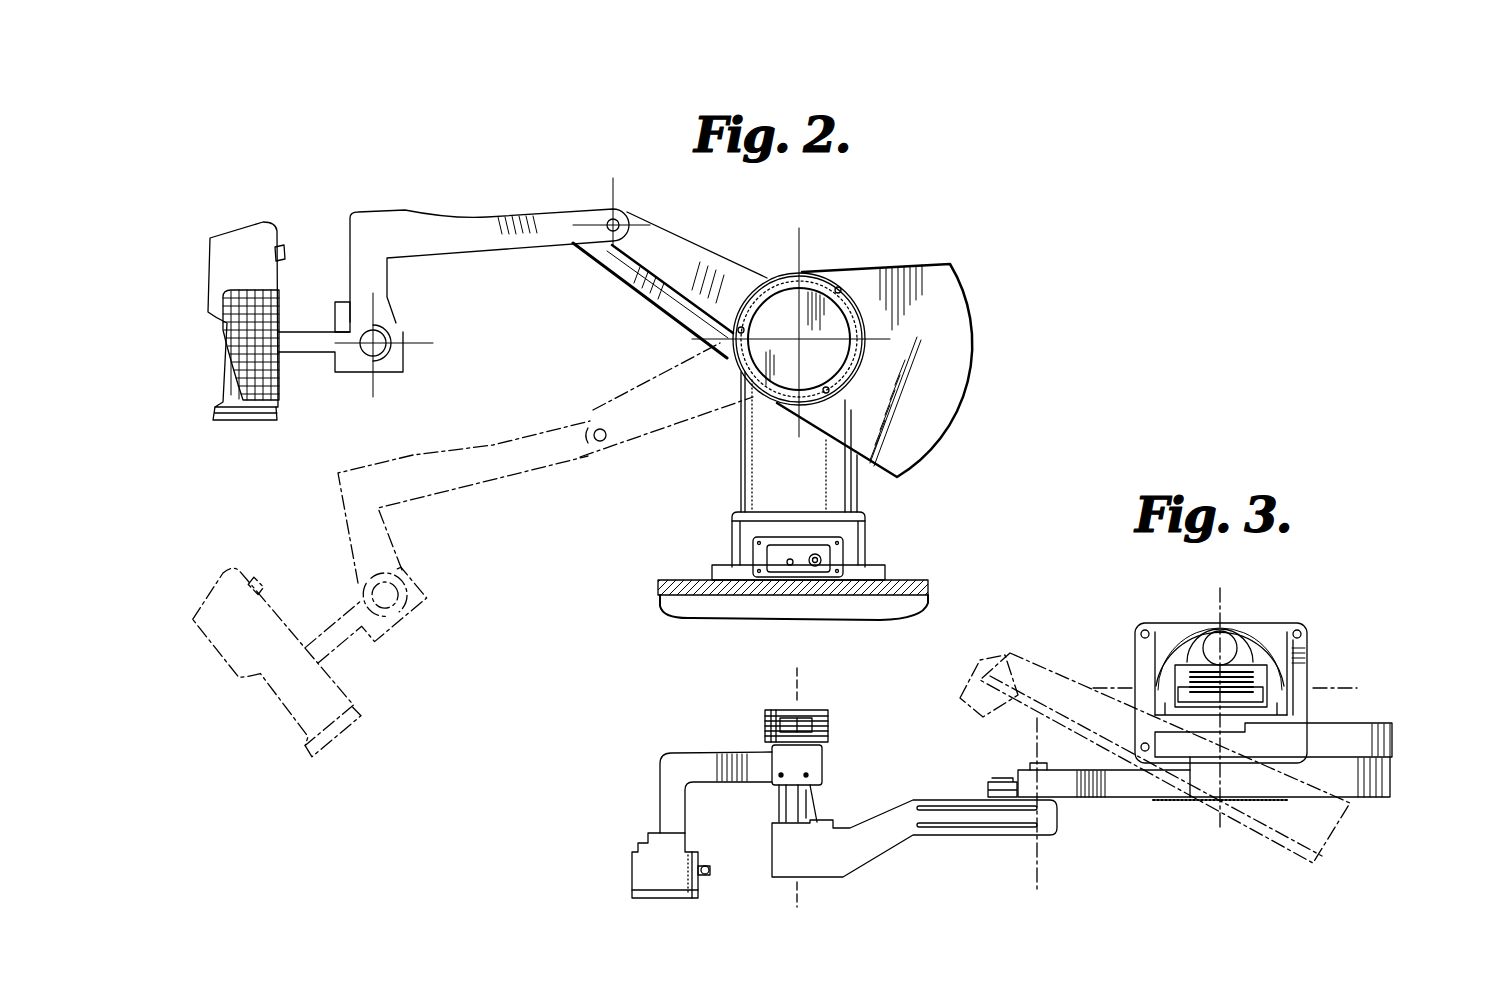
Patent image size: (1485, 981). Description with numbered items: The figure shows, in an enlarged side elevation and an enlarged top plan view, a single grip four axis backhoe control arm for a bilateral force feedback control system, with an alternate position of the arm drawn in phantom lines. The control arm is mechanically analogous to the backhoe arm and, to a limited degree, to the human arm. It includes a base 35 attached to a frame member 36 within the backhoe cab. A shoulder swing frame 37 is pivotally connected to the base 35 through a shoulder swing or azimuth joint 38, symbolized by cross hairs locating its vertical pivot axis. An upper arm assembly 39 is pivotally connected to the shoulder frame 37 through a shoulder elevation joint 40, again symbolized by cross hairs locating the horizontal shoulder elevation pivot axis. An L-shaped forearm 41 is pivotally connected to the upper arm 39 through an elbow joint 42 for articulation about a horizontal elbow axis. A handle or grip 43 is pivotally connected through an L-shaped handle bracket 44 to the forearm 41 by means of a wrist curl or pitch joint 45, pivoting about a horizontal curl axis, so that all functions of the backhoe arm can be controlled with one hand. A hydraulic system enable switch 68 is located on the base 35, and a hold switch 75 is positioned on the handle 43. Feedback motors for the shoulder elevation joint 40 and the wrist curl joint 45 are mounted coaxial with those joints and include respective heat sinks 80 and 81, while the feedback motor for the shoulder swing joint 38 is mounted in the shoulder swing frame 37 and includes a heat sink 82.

In FIG. 2, the base 35 is at (866, 556).
In FIG. 3, the base 35 is at (1180, 625).
In FIG. 2, the frame member 36 is at (920, 602).
In FIG. 3, the frame member 36 is at (1262, 640).
In FIG. 2, the shoulder swing frame 37 is at (740, 475).
In FIG. 3, the shoulder swing or azimuth joint 38 is at (1222, 603).
In FIG. 2, the upper arm assembly 39 is at (706, 260).
In FIG. 3, the upper arm assembly 39 is at (1024, 662).
In FIG. 2, the shoulder elevation joint 40 is at (802, 248).
In FIG. 2, the forearm 41 is at (479, 244).
In FIG. 3, the forearm 41 is at (878, 857).
In FIG. 2, the elbow joint 42 is at (619, 214).
In FIG. 2, the handle or grip 43 is at (208, 263).
In FIG. 3, the handle or grip 43 is at (630, 870).
In FIG. 2, the L-shaped handle bracket 44 is at (322, 357).
In FIG. 3, the L-shaped handle bracket 44 is at (710, 758).
In FIG. 2, the wrist curl or pitch joint 45 is at (381, 340).
In FIG. 3, the wrist curl or pitch joint 45 is at (790, 683).
In FIG. 2, the hydraulic system enable switch 68 is at (818, 553).
In FIG. 2, the hold switch 75 is at (282, 249).
In FIG. 3, the hold switch 75 is at (711, 868).
In FIG. 3, the heat exchanger or sink 80 is at (1255, 688).
In FIG. 3, the heat exchanger or sink 81 is at (830, 727).
In FIG. 3, the heat sink 82 is at (1213, 622).